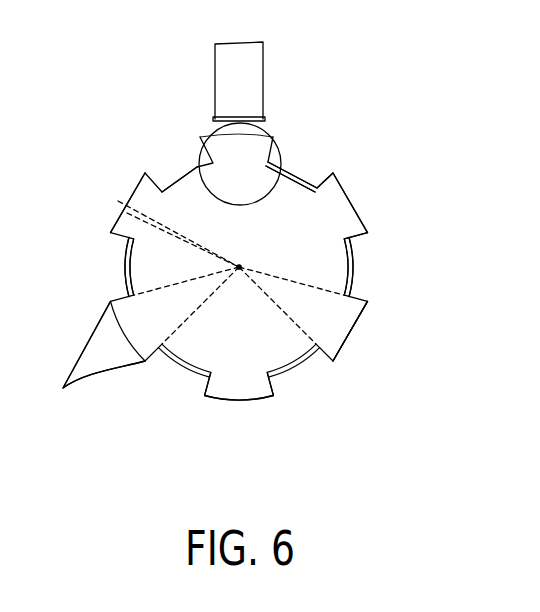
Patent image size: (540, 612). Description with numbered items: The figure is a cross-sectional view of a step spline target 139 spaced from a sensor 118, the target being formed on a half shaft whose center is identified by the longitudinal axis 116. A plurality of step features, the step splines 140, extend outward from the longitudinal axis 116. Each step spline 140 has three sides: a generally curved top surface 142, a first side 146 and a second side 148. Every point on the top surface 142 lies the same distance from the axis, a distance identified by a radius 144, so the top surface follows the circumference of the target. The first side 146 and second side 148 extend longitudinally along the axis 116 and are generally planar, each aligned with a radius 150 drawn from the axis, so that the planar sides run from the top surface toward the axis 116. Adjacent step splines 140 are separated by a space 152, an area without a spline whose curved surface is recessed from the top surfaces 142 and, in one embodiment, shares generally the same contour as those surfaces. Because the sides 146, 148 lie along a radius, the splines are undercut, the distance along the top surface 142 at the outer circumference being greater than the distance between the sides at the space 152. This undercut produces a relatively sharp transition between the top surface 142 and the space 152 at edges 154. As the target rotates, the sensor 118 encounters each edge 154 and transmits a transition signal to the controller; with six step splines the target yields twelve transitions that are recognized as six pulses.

The longitudinal axis 116 is at (240, 270).
The sensor 118 is at (255, 80).
The step spline target 139 is at (348, 428).
The step spline 140 is at (348, 197).
The top surface 142 is at (124, 187).
The radius 144 is at (118, 201).
The first side 146 is at (358, 243).
The second side 148 is at (325, 173).
The radius 150 is at (122, 297).
The space 152 is at (186, 159).
The edge 154 is at (63, 388).